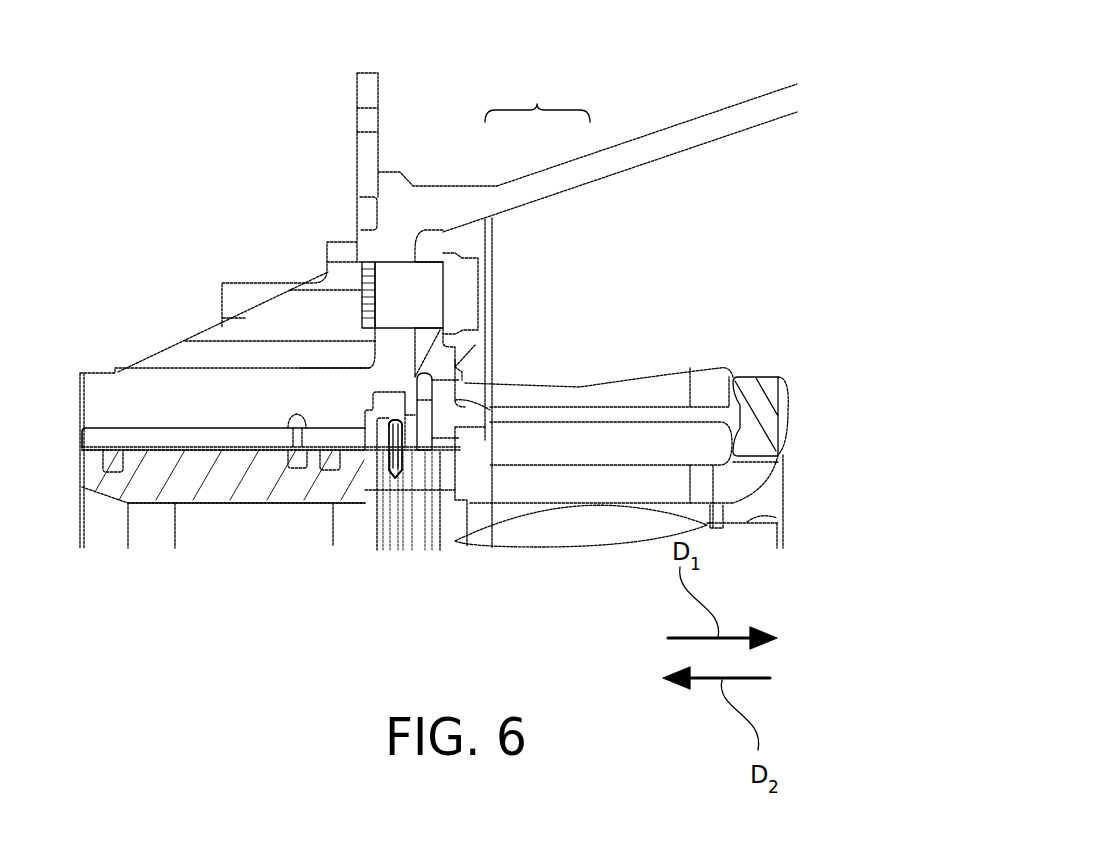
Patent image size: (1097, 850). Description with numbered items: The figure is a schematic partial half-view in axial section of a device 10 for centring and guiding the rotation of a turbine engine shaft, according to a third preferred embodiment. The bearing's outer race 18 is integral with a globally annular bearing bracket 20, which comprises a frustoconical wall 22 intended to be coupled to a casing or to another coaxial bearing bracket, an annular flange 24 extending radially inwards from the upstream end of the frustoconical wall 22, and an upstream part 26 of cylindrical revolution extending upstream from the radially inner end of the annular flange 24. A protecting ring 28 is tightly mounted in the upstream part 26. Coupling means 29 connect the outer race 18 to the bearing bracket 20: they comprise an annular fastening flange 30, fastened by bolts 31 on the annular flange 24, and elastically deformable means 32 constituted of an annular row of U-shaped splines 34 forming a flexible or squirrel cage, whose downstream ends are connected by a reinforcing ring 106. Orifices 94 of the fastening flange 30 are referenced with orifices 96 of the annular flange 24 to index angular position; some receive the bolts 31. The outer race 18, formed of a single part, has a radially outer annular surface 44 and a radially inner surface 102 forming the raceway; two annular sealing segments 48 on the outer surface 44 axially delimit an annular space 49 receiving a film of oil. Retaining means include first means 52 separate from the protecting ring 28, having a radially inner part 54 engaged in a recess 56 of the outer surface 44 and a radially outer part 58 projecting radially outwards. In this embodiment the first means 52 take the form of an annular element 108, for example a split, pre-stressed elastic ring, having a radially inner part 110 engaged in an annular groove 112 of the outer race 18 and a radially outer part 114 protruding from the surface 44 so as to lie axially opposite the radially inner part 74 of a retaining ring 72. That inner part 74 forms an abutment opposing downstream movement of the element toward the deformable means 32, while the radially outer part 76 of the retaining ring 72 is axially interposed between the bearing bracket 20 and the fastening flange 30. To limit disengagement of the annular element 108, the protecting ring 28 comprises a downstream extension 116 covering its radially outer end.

The device 10 is at (163, 99).
The outer race 18 is at (152, 490).
The bearing bracket 20 is at (173, 344).
The frustoconical wall 22 is at (760, 110).
The annular flange 24 is at (408, 369).
The upstream part 26 is at (253, 411).
The protecting ring 28 is at (170, 440).
The coupling means 29 is at (537, 100).
The annular fastening flange 30 is at (432, 240).
The bolts 31 is at (403, 260).
The elastically deformable means 32 is at (603, 370).
The splines 34 is at (678, 392).
The radially outer annular surface 44 is at (217, 448).
The annular sealing segments 48 is at (113, 463).
The annular space 49 is at (188, 452).
The first means 52 is at (391, 432).
The radially inner part 54 is at (406, 468).
The recess 56 is at (400, 478).
The radially outer part 58 is at (393, 427).
The retaining ring 72 is at (440, 410).
The radially inner part 74 is at (440, 438).
The radially outer part 76 is at (432, 380).
The orifices 94 is at (435, 265).
The orifices 96 is at (368, 260).
The radially inner surface 102 is at (176, 503).
The reinforcing ring 106 is at (750, 395).
The annular element 108 is at (395, 449).
The radially inner part 110 is at (408, 501).
The annular groove 112 is at (395, 474).
The radially outer part 114 is at (395, 422).
The extension 116 is at (393, 410).